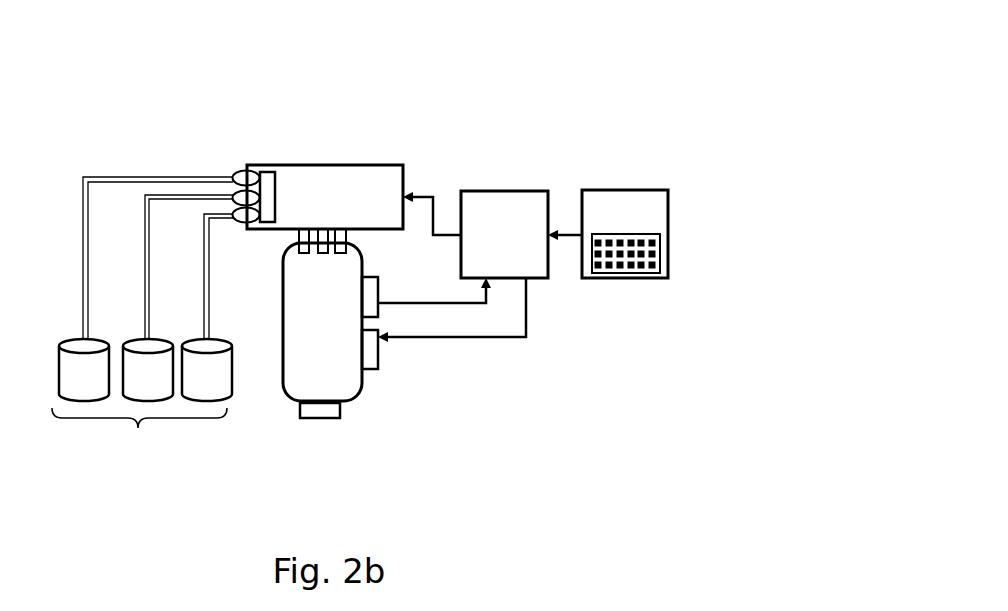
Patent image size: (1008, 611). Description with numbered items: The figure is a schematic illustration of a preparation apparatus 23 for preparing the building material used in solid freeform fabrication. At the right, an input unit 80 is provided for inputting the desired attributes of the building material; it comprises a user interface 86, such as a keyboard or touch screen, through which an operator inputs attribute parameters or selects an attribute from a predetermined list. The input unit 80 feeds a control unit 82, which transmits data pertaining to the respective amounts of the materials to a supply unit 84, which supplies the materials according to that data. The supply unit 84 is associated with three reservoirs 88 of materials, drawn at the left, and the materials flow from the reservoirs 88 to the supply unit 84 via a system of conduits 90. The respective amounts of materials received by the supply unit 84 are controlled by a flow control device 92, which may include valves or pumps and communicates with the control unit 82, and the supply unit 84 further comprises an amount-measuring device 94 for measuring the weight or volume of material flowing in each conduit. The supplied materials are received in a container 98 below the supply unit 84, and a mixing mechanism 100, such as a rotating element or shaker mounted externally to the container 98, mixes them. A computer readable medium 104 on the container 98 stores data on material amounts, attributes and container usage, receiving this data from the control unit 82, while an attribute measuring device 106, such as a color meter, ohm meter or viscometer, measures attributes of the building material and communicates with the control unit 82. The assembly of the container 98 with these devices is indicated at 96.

The preparation apparatus 23 is at (127, 45).
The input unit 80 is at (655, 202).
The control unit 82 is at (507, 200).
The supply unit 84 is at (343, 178).
The user interface 86 is at (662, 255).
The reservoirs 88 is at (142, 415).
The conduits 90 is at (82, 242).
The flow control device 92 is at (233, 170).
The amount-measuring device 94 is at (266, 176).
The mixing assembly 96 is at (368, 412).
The container 98 is at (283, 350).
The mixing mechanism 100 is at (310, 408).
The computer readable medium 104 is at (367, 358).
The attribute measuring device 106 is at (372, 282).